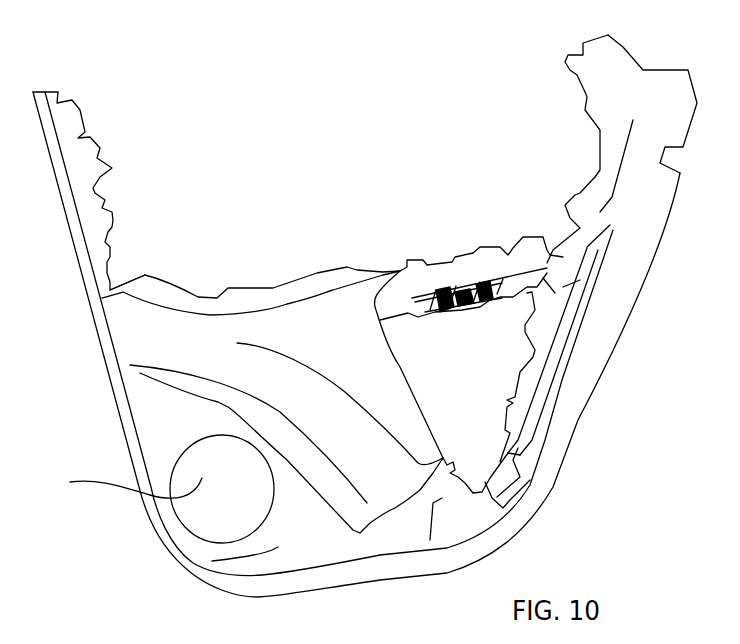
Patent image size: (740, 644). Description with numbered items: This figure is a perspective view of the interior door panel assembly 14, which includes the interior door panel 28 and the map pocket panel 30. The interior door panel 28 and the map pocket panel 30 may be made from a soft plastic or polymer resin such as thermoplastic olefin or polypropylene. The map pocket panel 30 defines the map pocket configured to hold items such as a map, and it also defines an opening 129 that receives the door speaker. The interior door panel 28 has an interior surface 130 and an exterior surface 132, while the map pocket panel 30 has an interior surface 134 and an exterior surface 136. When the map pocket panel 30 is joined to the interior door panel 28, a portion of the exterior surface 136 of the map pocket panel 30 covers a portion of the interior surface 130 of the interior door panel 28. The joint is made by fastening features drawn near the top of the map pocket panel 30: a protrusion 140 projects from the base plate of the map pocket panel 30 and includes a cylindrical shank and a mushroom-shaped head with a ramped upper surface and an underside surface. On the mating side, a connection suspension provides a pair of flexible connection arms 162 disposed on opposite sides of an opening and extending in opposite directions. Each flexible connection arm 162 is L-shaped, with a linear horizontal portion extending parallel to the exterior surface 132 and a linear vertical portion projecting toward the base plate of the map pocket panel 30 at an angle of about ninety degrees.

The interior door panel assembly 14 is at (188, 129).
The interior door panel 28 is at (308, 352).
The map pocket panel 30 is at (490, 383).
The opening 129 is at (155, 489).
The interior surface 130 is at (95, 328).
The exterior surface 132 is at (290, 350).
The interior surface 134 is at (242, 533).
The exterior surface 136 is at (493, 318).
The protrusion 140 is at (468, 284).
The flexible connection arms 162 is at (442, 292).